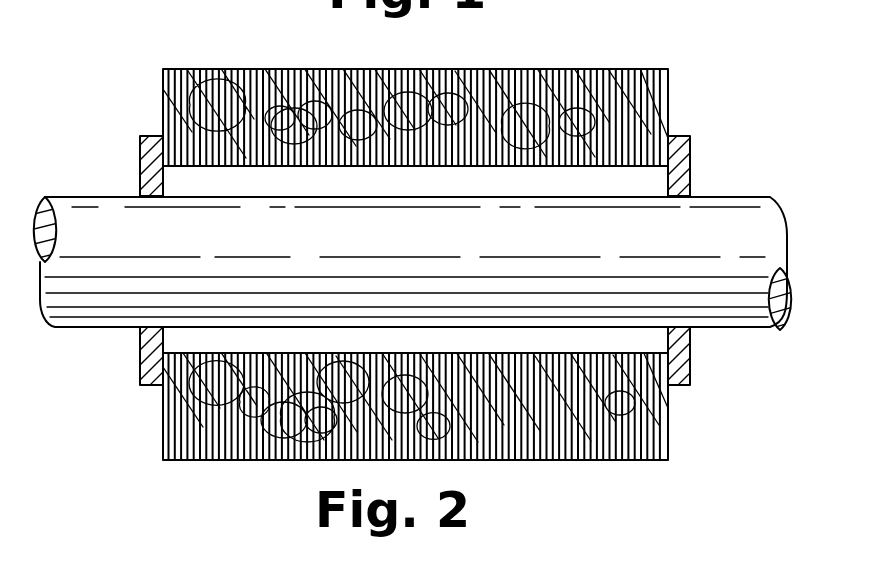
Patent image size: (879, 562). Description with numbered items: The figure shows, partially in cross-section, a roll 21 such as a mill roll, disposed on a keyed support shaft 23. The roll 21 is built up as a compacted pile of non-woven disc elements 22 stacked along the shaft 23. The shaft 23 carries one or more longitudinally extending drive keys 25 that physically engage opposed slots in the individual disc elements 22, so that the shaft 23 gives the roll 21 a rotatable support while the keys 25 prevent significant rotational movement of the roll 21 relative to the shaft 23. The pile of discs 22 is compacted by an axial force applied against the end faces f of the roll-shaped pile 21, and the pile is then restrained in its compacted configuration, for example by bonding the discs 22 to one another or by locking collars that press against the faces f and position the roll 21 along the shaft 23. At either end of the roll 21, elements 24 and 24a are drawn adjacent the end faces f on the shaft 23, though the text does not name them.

The roll 21 is at (592, 58).
The non-woven disc elements 22 is at (300, 72).
The support shaft 23 is at (762, 200).
The end plate 24 is at (141, 138).
The end plate 24a is at (690, 137).
The drive keys 25 is at (188, 340).
The end faces f is at (165, 425).